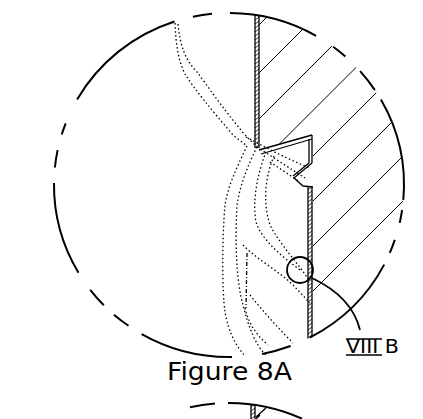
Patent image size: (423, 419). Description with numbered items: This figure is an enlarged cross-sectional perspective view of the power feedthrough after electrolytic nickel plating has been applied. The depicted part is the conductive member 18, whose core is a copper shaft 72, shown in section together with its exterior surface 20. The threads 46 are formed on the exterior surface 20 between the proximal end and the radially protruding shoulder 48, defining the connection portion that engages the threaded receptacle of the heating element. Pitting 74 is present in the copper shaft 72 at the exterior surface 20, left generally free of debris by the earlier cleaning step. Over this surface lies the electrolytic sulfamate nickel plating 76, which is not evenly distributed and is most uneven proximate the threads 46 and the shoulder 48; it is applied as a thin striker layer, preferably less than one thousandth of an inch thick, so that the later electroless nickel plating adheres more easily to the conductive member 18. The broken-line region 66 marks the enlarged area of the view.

The conductive member 18 is at (105, 179).
The exterior surface 20 is at (212, 43).
The threads 46 is at (231, 197).
The radially protruding shoulder 48 is at (300, 150).
The detail region 66 is at (94, 58).
The copper shaft 72 is at (300, 63).
The pitting 74 is at (249, 214).
The electrolytic sulfamate nickel plating 76 is at (270, 297).